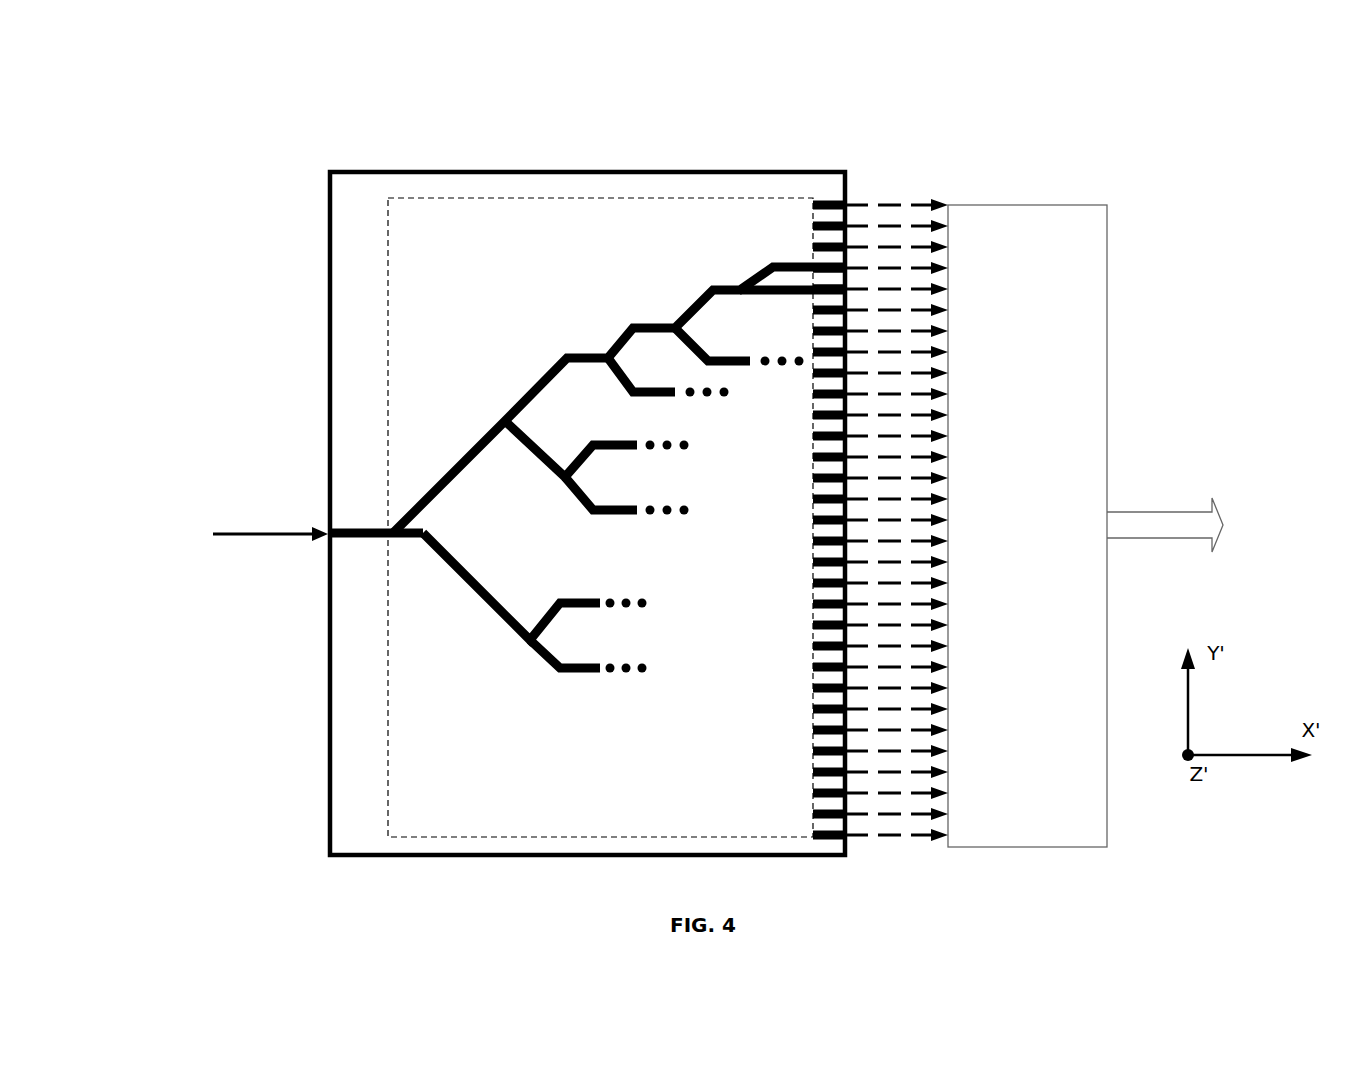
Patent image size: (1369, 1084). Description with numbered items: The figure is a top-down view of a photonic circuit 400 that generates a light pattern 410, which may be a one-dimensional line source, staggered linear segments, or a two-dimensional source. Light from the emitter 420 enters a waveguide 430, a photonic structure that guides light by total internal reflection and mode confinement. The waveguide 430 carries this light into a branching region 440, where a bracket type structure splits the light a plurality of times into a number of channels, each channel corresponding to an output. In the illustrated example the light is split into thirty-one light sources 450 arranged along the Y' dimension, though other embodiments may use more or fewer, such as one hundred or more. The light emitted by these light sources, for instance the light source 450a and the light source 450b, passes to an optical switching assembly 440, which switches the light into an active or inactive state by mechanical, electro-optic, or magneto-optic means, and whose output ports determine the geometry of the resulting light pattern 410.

The photonic circuit 400 is at (207, 61).
The light pattern 410 is at (1188, 497).
The light from the emitter 420 is at (206, 538).
The waveguide 430 is at (367, 530).
The branching region / optical switching assembly 440 is at (392, 745).
The light sources 450 is at (847, 862).
The light source 450a is at (847, 266).
The light source 450b is at (847, 288).